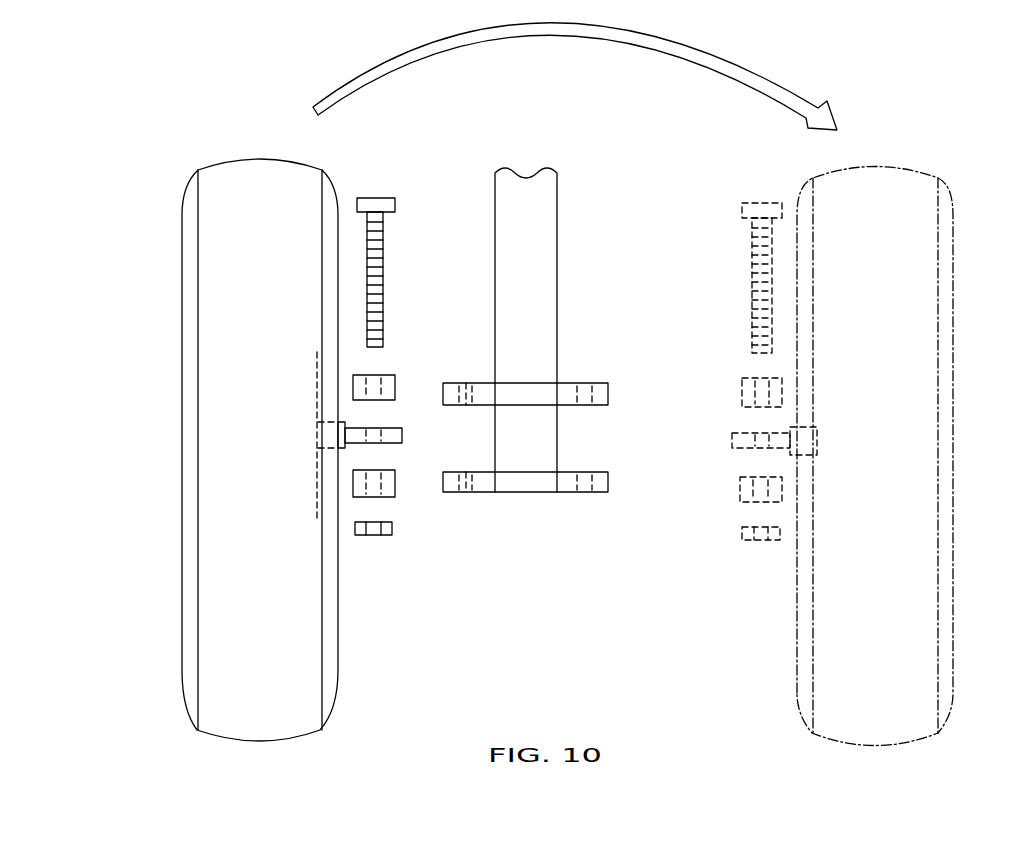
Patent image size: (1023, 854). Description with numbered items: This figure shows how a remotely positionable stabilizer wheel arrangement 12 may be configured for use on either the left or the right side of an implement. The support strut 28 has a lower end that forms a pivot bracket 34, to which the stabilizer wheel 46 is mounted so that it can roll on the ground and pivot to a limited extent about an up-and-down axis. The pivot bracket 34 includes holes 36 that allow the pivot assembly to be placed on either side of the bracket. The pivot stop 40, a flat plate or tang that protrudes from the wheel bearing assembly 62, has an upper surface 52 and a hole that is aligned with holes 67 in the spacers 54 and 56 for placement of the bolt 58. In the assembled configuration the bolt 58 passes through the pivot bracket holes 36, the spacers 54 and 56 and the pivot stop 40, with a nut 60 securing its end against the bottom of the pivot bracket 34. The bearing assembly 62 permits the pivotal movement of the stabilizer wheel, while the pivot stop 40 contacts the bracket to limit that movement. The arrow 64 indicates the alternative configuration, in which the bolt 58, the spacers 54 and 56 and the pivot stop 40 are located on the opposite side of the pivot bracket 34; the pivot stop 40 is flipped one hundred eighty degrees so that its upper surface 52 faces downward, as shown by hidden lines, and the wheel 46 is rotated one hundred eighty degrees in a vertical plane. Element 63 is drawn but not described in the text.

The stabilizer wheel arrangement 12 is at (599, 405).
The support strut 28 is at (553, 328).
The pivot bracket 34 is at (606, 385).
The holes 36 is at (585, 472).
The pivot stop 40 is at (402, 437).
The stabilizer wheel 46 is at (205, 378).
The upper surface 52 is at (372, 428).
The spacer 54 is at (395, 390).
The spacer 56 is at (395, 483).
The bolt 58 is at (378, 197).
The nut 60 is at (375, 535).
The wheel bearing assembly 62 is at (313, 435).
The bolt hole 63 is at (466, 383).
The arrow 64 is at (568, 36).
The holes 67 is at (378, 374).